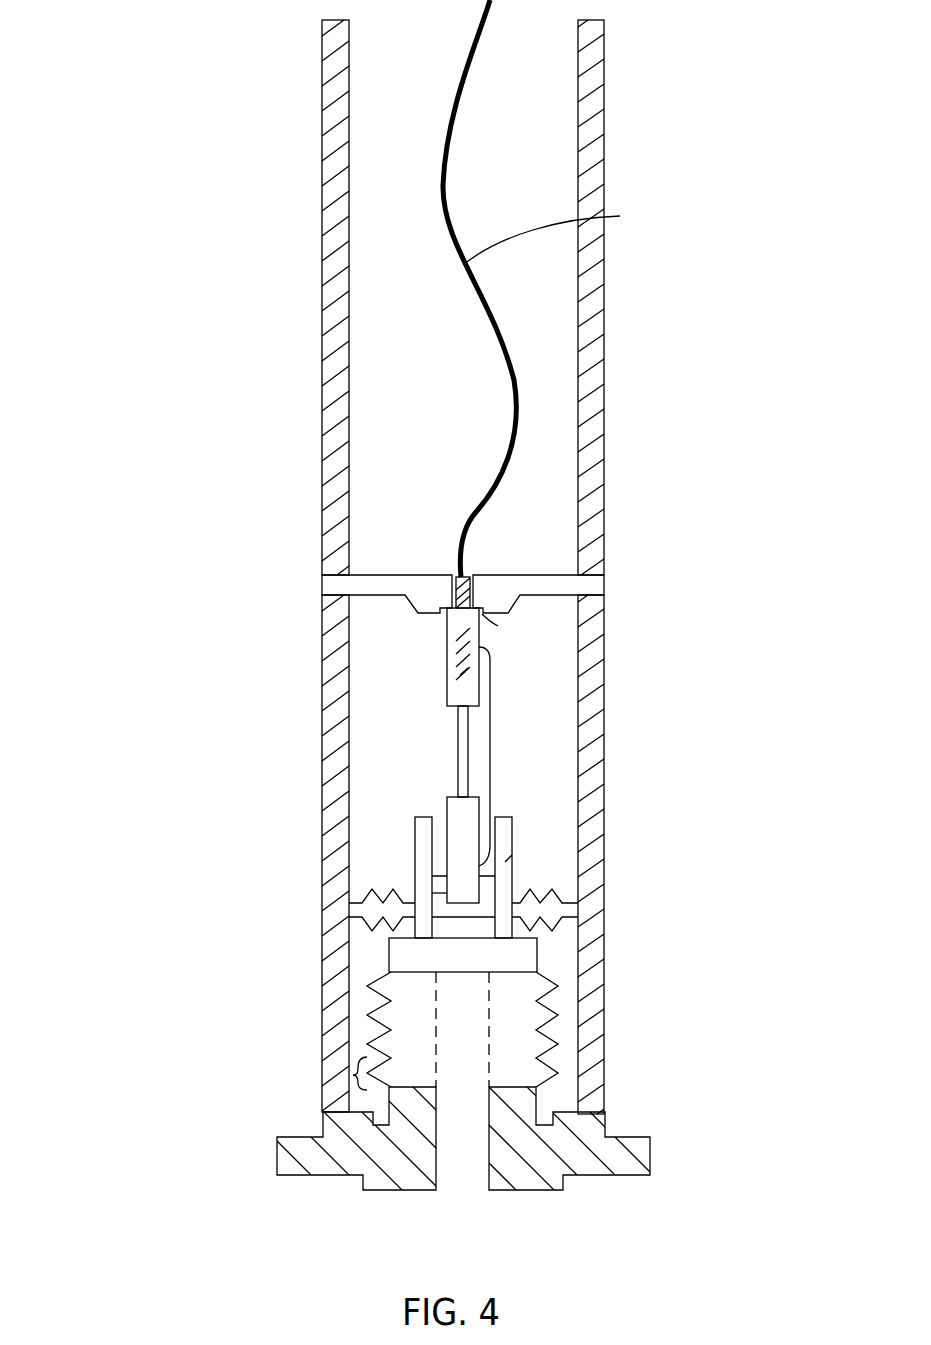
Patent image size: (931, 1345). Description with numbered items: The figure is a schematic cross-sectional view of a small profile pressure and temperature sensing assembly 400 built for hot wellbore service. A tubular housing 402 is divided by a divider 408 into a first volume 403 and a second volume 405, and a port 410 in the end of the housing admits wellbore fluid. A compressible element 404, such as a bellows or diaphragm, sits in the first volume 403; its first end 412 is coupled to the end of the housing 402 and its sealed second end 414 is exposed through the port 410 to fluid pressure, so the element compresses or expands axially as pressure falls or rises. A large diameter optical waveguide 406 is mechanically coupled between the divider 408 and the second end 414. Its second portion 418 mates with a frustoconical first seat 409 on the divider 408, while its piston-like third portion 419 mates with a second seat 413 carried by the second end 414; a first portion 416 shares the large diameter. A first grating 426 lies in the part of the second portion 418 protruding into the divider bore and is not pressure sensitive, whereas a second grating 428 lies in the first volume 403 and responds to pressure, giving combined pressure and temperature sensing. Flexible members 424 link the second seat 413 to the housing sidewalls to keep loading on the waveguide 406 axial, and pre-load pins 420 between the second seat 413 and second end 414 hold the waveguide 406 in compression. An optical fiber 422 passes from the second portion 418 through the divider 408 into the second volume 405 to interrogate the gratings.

The sensing assembly 400 is at (134, 74).
The housing 402 is at (333, 189).
The second volume 405 is at (461, 394).
The optical fiber 422 is at (620, 216).
The first grating 426 is at (474, 587).
The divider 408 is at (333, 583).
The first seat 409 is at (498, 626).
The second portion 418 is at (457, 635).
The second grating 428 is at (460, 675).
The large diameter optical waveguide 406 is at (490, 753).
The first portion 416 is at (462, 756).
The third portion 419 is at (455, 811).
The first volume 403 is at (378, 841).
The second seat 413 is at (440, 893).
The pre-load pins 420 is at (505, 862).
The flexible members 424 is at (556, 913).
The second end 414 is at (405, 962).
The compressible element 404 is at (537, 1045).
The first end 412 is at (355, 1075).
The port 410 is at (465, 1182).